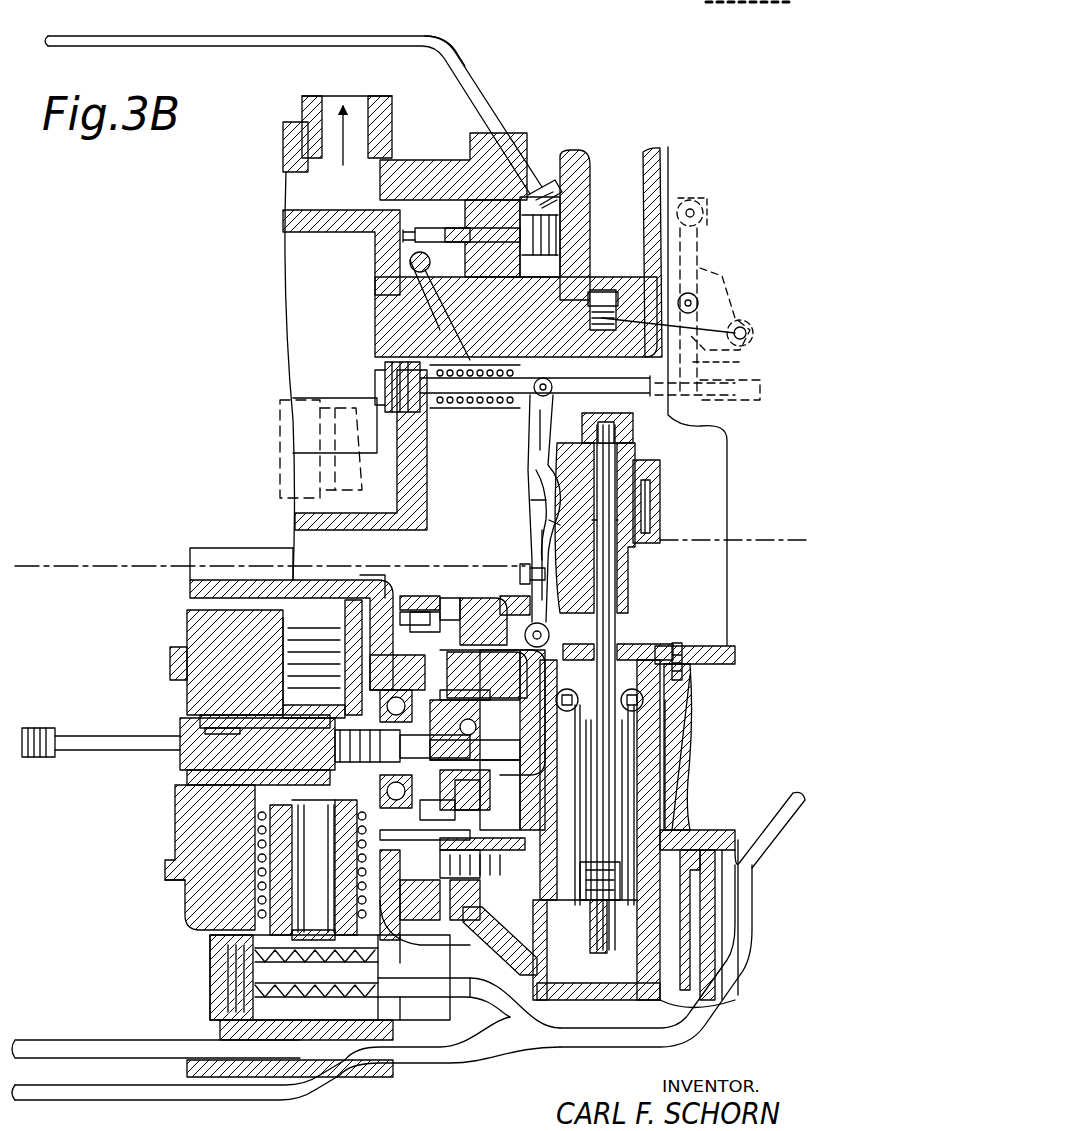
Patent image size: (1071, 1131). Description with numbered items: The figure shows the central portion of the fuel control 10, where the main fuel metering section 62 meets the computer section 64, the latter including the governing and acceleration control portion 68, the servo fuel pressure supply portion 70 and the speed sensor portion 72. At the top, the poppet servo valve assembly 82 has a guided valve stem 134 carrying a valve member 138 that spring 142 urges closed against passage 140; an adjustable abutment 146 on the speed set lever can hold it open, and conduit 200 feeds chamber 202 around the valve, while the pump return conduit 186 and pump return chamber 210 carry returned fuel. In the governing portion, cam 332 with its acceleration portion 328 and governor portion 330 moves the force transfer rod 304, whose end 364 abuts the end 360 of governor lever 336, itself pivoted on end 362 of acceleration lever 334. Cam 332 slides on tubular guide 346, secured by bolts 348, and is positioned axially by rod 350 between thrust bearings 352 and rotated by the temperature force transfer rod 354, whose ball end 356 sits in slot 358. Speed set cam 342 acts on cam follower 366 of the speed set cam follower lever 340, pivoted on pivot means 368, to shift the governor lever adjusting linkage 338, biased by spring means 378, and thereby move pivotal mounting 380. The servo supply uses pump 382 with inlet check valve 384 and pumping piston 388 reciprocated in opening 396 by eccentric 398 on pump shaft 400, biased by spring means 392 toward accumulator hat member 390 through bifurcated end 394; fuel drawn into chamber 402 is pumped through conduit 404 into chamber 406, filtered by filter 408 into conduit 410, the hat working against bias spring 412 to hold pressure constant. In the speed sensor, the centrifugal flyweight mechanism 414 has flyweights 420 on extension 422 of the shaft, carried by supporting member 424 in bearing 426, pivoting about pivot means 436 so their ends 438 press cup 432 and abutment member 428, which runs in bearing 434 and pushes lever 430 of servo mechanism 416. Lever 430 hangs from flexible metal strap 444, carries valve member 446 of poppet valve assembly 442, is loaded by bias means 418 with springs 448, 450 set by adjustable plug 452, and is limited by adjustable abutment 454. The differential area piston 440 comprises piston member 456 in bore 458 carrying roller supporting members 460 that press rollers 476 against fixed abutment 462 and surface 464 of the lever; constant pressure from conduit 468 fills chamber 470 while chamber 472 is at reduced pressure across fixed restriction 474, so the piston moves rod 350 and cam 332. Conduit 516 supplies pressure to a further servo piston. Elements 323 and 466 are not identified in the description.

The fuel control 10 is at (745, 1022).
The main fuel metering section 62 is at (283, 40).
The computer section 64 is at (727, 660).
The governing and acceleration control portion 68 is at (528, 498).
The servo fuel pressure supply portion 70 is at (190, 850).
The speed sensor portion 72 is at (600, 1010).
The poppet servo valve assembly 82 is at (560, 200).
The guided valve stem 134 is at (485, 215).
The valve member 138 is at (550, 235).
The passage 140 is at (538, 192).
The spring 142 is at (552, 230).
The adjustable abutment 146 is at (425, 226).
The pump return conduit 186 is at (330, 100).
The conduit 200 is at (438, 40).
The chamber 202 is at (562, 205).
The pump return chamber 210 is at (305, 186).
The force transfer rod 304 is at (428, 578).
The lower conduit 323 is at (102, 1100).
The acceleration portion 328 is at (505, 600).
The governor portion 330 is at (530, 470).
The cam 332 is at (556, 522).
The acceleration lever 334 is at (550, 632).
The governor lever 336 is at (540, 482).
The governor lever adjusting linkage 338 is at (636, 370).
The speed set cam follower lever 340 is at (693, 343).
The speed set cam 342 is at (735, 290).
The tubular guide 346 is at (617, 590).
The bolts 348 is at (672, 652).
The rod 350 is at (592, 620).
The thrust bearings 352 is at (614, 448).
The force transfer rod 354 is at (780, 538).
The end 356 is at (652, 520).
The complementary slot 358 is at (648, 490).
The end 360 is at (592, 556).
The end 362 is at (602, 578).
The end 364 is at (516, 570).
The cam follower 366 is at (712, 270).
The pivot means 368 is at (710, 210).
The spring means 378 is at (448, 412).
The pivotal mounting 380 is at (530, 392).
The variable volume constant pressure pump 382 is at (336, 580).
The inlet check valve 384 is at (430, 590).
The pumping piston 388 is at (286, 655).
The accumulator hat member 390 is at (330, 832).
The spring means 392 is at (190, 616).
The bifurcated end 394 is at (250, 805).
The opening 396 is at (280, 645).
The eccentric 398 is at (235, 716).
The pump shaft 400 is at (225, 730).
The chamber 402 is at (312, 600).
The conduit 404 is at (160, 1042).
The chamber 406 is at (380, 870).
The filter 408 is at (325, 1005).
The conduit 410 is at (440, 1000).
The bias spring 412 is at (255, 896).
The centrifugal flyweight mechanism 414 is at (362, 850).
The servo mechanism 416 is at (700, 945).
The bias means 418 is at (460, 882).
The centrifugal flyweights 420 is at (487, 648).
The extension 422 is at (485, 710).
The supporting member 424 is at (246, 744).
The bearing 426 is at (408, 665).
The abutment member 428 is at (501, 795).
The lever 430 is at (450, 806).
The cup 432 is at (445, 648).
The bearing 434 is at (488, 795).
The pivot means 436 is at (430, 812).
The ends 438 is at (506, 685).
The differential area piston 440 is at (625, 920).
The poppet valve assembly 442 is at (480, 915).
The flexible metal strap 444 is at (456, 622).
The valve member 446 is at (510, 935).
The spring 448 is at (533, 940).
The spring 450 is at (465, 910).
The adjustable plug 452 is at (362, 886).
The adjustable abutment 454 is at (455, 838).
The cylindrical cup shaped piston member 456 is at (668, 756).
The bore 458 is at (722, 915).
The roller supporting members 460 is at (685, 735).
The fixed abutment 462 is at (655, 700).
The variably positioned surface 464 is at (613, 667).
The flange 466 is at (660, 836).
The conduit 468 is at (705, 860).
The chamber 470 is at (660, 820).
The chamber 472 is at (620, 1000).
The fixed restriction 474 is at (710, 880).
The rollers 476 is at (680, 712).
The conduit 516 is at (788, 790).